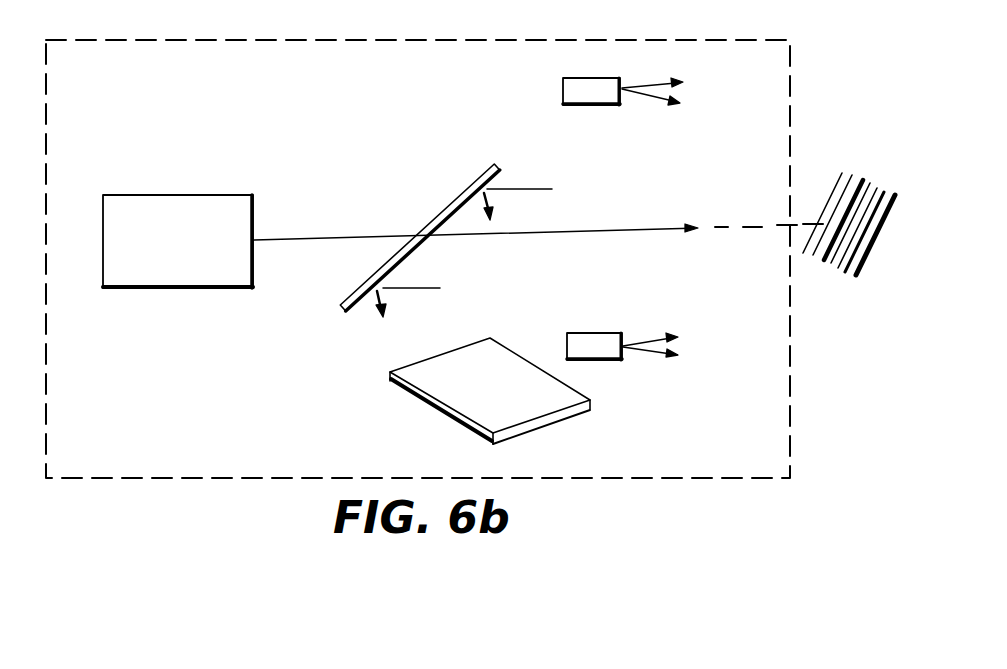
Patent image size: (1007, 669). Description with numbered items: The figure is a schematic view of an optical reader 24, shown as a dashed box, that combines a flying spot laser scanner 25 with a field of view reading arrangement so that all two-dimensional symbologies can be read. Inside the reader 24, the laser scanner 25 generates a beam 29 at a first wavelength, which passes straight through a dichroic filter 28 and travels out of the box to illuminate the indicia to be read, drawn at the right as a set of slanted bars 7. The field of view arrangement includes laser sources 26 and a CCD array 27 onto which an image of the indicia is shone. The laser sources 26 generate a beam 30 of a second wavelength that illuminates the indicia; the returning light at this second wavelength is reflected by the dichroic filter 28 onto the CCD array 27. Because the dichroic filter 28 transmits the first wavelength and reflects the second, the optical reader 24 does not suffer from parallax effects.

The optical reader 24 is at (484, 40).
The flying spot laser scanner 25 is at (209, 195).
The laser sources 26 is at (563, 93).
The CCD array 27 is at (391, 380).
The dichroic filter 28 is at (463, 192).
The beam 29 is at (344, 237).
The beam 30 is at (550, 190).
The bar code 7 is at (830, 275).